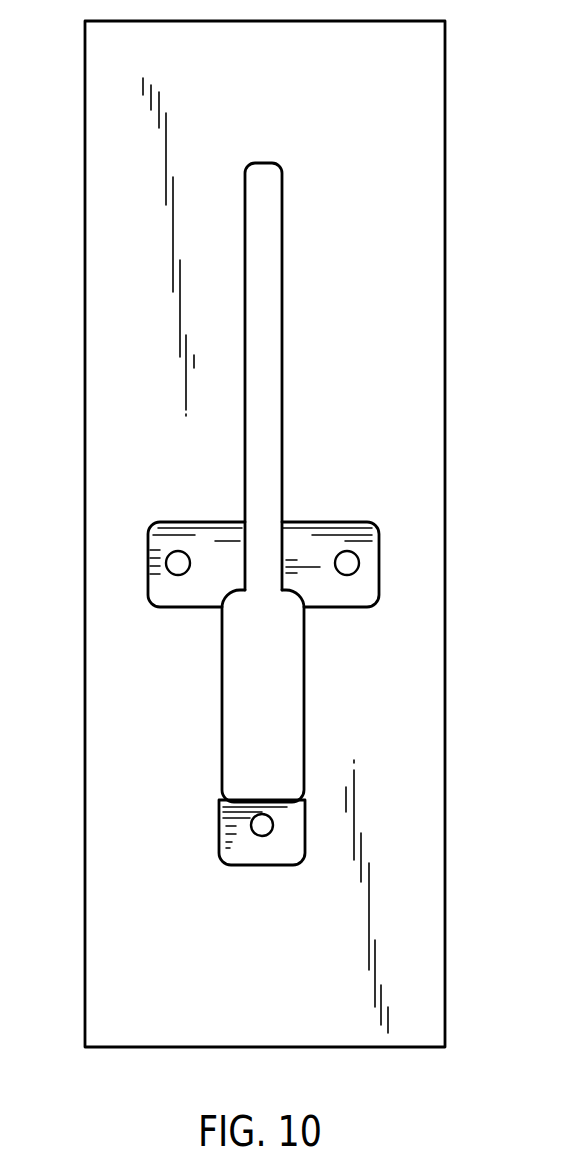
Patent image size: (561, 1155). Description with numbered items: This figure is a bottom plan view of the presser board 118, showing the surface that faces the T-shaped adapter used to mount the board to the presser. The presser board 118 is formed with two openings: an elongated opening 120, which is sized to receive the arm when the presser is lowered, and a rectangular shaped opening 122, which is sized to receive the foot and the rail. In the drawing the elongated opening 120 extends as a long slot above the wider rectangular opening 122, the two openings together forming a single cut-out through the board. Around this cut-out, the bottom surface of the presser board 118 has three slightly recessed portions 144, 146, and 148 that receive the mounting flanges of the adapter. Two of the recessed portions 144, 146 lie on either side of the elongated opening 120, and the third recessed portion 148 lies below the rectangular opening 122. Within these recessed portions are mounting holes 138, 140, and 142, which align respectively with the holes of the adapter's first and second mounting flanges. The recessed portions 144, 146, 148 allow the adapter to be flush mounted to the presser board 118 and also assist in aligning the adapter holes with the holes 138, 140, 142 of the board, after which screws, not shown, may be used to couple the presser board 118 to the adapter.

The presser board 118 is at (402, 830).
The elongated opening 120 is at (263, 359).
The rectangular shaped opening 122 is at (263, 710).
The mounting hole 138 is at (178, 563).
The mounting hole 140 is at (347, 563).
The mounting hole 142 is at (262, 823).
The recessed portion 144 is at (221, 542).
The recessed portion 146 is at (303, 542).
The recessed portion 148 is at (241, 840).